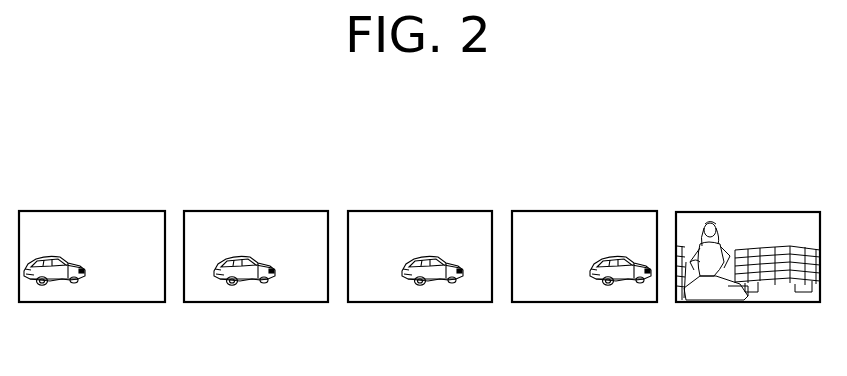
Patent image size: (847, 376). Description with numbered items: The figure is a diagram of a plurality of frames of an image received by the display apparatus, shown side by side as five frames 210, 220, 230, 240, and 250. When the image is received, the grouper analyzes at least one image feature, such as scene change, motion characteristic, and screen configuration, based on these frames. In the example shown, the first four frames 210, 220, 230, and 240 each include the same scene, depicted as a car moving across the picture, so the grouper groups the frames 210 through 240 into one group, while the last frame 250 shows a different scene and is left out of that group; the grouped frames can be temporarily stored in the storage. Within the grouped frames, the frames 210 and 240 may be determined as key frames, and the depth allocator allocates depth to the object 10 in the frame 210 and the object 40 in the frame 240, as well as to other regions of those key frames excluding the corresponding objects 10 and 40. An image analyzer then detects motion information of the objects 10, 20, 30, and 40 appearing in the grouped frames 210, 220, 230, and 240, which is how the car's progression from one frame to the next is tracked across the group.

The frame 210 is at (134, 210).
The frame 220 is at (298, 210).
The frame 230 is at (462, 210).
The frame 240 is at (625, 210).
The frame 250 is at (790, 211).
The object 10 is at (52, 288).
The object 20 is at (241, 288).
The object 30 is at (429, 288).
The object 40 is at (617, 288).